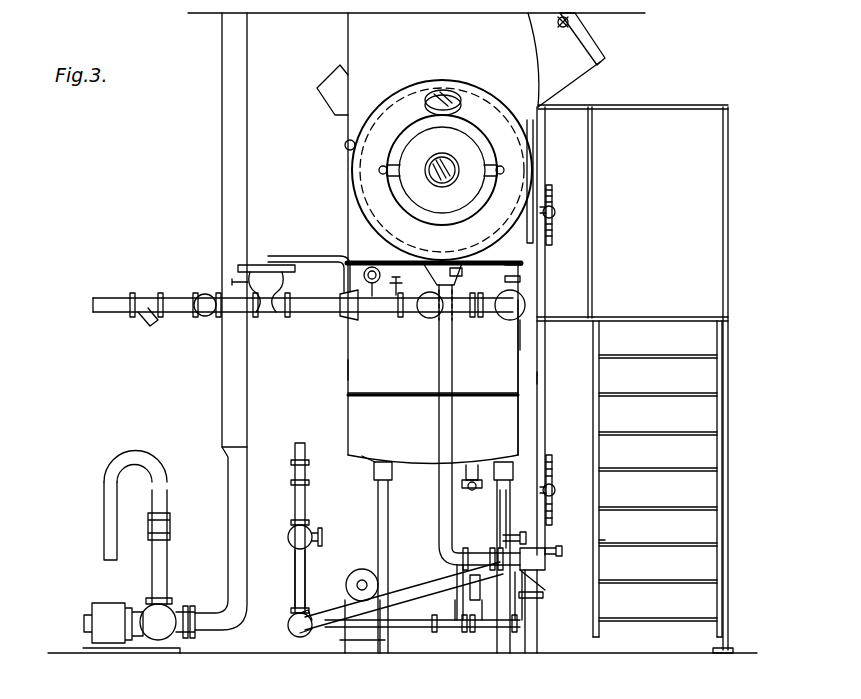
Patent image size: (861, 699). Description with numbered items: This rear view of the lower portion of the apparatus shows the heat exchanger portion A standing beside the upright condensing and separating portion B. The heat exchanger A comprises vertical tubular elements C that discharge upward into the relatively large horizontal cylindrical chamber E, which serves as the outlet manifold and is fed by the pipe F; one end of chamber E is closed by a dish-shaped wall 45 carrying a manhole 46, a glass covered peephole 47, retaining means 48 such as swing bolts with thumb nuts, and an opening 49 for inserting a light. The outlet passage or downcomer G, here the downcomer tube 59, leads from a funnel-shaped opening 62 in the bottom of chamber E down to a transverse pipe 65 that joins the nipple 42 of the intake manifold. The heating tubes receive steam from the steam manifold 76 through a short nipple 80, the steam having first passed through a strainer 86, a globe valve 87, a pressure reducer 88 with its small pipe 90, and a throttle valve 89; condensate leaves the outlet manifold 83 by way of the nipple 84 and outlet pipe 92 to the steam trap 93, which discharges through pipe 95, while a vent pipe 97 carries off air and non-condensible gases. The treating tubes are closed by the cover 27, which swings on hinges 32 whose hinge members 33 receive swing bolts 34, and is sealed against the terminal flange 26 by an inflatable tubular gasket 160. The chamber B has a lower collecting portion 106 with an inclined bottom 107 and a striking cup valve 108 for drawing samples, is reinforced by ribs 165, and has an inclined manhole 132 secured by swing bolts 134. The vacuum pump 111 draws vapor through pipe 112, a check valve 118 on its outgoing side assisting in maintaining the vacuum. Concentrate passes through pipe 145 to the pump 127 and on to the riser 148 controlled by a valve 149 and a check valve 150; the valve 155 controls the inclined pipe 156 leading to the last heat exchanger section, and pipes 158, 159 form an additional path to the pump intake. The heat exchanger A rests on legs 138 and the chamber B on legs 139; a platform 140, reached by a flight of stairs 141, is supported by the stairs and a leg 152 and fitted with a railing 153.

The heat exchanger portion A is at (358, 210).
The condensing and separating portion B is at (348, 40).
The vertical tubular elements C is at (527, 413).
The horizontal cylindrical chamber E is at (392, 105).
The pipe F is at (490, 255).
The outlet passage G is at (440, 420).
The terminal flange 26 is at (540, 295).
The closure 27 is at (530, 378).
The hinges 32 is at (552, 193).
The hinge member 33 is at (552, 205).
The swing bolt 34 is at (555, 215).
The nipple 42 is at (535, 597).
The dish-shaped wall 45 is at (480, 105).
The manhole 46 is at (465, 148).
The glass covered peephole 47 is at (438, 185).
The retaining means 48 is at (380, 171).
The opening 49 is at (446, 94).
The downcomer tube 59 is at (438, 362).
The funnel-shaped opening 62 is at (458, 270).
The transverse pipe 65 is at (500, 548).
The steam manifold 76 is at (505, 330).
The short nipple 80 is at (490, 320).
The outlet manifold 83 is at (578, 532).
The nipple 84 is at (500, 540).
The strainer 86 is at (140, 318).
The globe valve 87 is at (205, 317).
The pressure reducer 88 is at (265, 315).
The throttle valve 89 is at (428, 318).
The small pipe 90 is at (320, 256).
The outlet pipe 92 is at (485, 595).
The steam trap 93 is at (440, 550).
The pipe 95 is at (462, 635).
The vent pipe 97 is at (520, 279).
The lower portion 106 is at (357, 368).
The bottom 107 is at (362, 458).
The striking cup valve 108 is at (470, 466).
The vacuum pump 111 is at (170, 610).
The pipe 112 is at (222, 183).
The check valve 118 is at (170, 527).
The pump 127 is at (362, 648).
The manhole 132 is at (605, 60).
The swing bolts 134 is at (600, 30).
The legs 138 is at (535, 635).
The legs 139 is at (378, 505).
The platform 140 is at (668, 310).
The flight of stairs 141 is at (672, 428).
The pipe 145 is at (410, 640).
The riser 148 is at (295, 575).
The valve 149 is at (296, 535).
The check valve 150 is at (300, 462).
The leg 152 is at (730, 647).
The railing 153 is at (592, 272).
The valve 155 is at (298, 630).
The inclined pipe 156 is at (415, 588).
The pipe 158 is at (540, 584).
The pipe 159 is at (495, 635).
The tubular gasket 160 is at (600, 540).
The ribs 165 is at (345, 146).